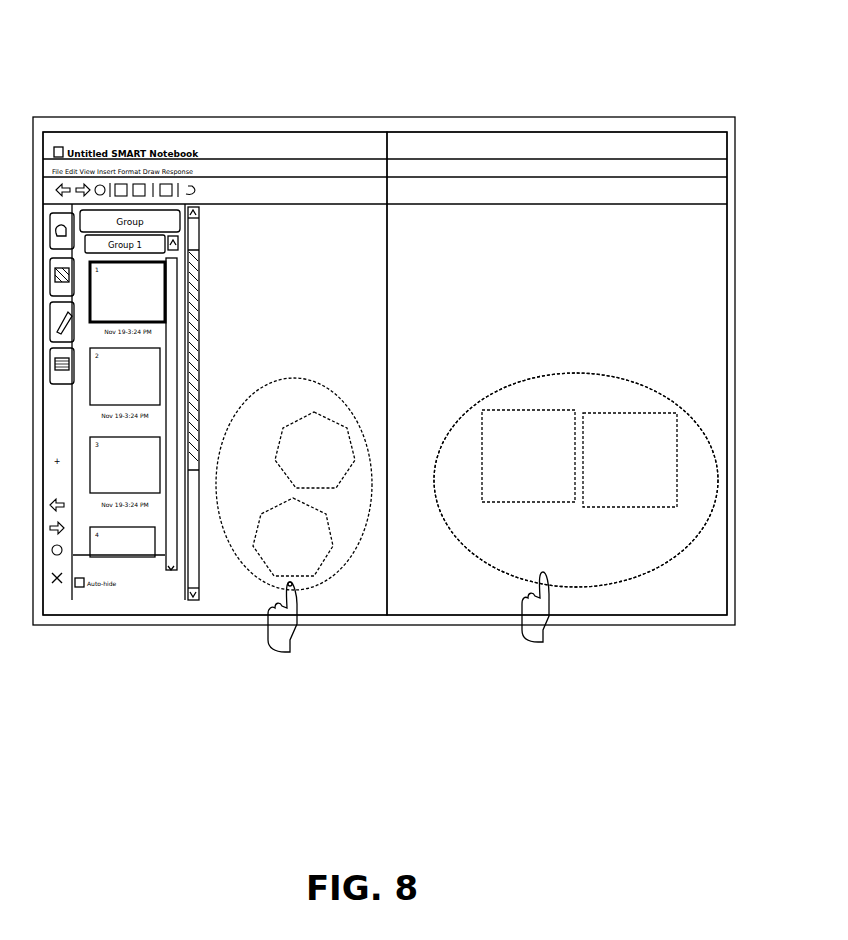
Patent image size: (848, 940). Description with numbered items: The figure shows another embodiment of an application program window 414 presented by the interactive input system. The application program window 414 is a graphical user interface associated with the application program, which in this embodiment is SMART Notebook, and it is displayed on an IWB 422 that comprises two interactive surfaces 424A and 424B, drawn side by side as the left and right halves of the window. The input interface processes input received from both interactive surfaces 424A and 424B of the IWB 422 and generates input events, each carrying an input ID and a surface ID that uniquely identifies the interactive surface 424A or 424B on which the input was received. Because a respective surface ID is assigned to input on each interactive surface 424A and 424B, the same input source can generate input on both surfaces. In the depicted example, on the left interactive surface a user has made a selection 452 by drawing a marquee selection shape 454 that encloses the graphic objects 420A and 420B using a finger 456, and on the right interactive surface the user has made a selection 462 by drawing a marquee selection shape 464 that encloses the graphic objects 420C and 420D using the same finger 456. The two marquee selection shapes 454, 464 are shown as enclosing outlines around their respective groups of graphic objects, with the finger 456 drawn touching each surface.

The application program window 414 is at (103, 103).
The IWB 422 is at (135, 117).
The interactive surface 424A is at (338, 130).
The interactive surface 424B is at (497, 130).
The selection 452 is at (312, 366).
The graphic object 420A is at (315, 450).
The graphic object 420B is at (293, 537).
The marquee selection shape 454 is at (248, 578).
The finger 456 is at (300, 600).
The selection 462 is at (585, 352).
The marquee selection shape 464 is at (653, 392).
The graphic object 420C is at (528, 456).
The graphic object 420D is at (630, 460).